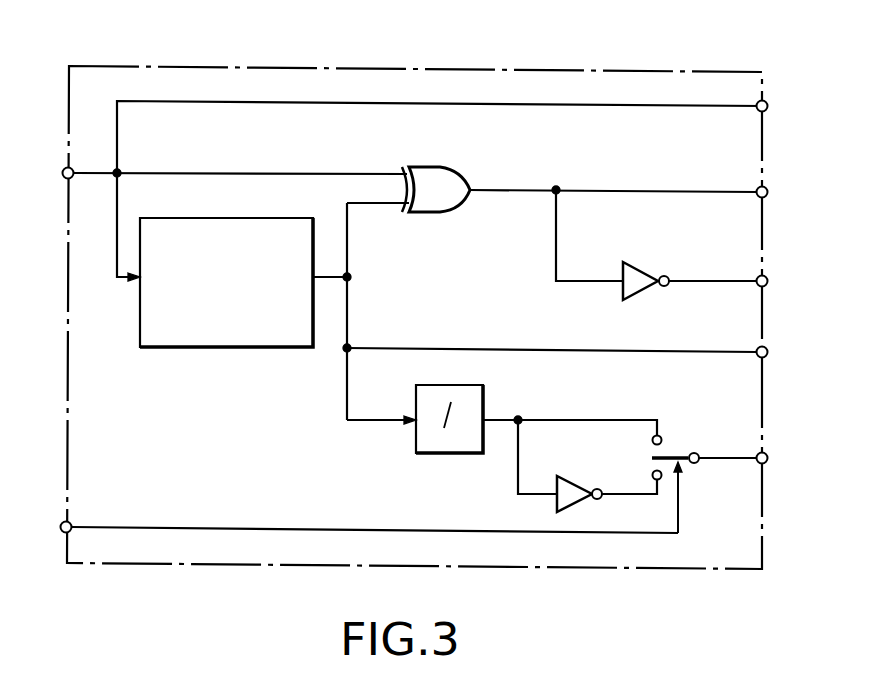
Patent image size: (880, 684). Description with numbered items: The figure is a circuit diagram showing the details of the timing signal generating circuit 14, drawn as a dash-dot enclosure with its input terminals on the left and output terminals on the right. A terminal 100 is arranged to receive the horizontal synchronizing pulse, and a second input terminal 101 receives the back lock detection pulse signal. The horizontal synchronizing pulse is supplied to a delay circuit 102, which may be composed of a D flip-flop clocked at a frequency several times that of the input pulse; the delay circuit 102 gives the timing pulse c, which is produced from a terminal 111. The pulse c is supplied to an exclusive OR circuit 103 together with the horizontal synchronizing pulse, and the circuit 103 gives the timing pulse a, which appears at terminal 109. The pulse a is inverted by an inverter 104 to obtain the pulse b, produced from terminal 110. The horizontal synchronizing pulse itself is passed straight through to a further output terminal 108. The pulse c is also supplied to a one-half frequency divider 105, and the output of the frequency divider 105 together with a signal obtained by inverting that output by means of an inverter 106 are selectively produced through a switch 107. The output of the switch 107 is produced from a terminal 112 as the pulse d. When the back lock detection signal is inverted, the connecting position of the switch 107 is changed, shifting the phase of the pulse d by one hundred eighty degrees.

The timing signal generating circuit 14 is at (636, 70).
The terminal 100 is at (62, 180).
The RL input terminal 101 is at (72, 522).
The delay circuit 102 is at (241, 348).
The exclusive OR circuit 103 is at (438, 213).
The inverter 104 is at (643, 262).
The ½ frequency divider 105 is at (430, 455).
The inverter 106 is at (580, 478).
The switch 107 is at (673, 452).
The HSP output terminal 108 is at (767, 99).
The terminal 109 is at (768, 186).
The terminal 110 is at (768, 274).
The terminal 111 is at (769, 348).
The terminal 112 is at (768, 451).